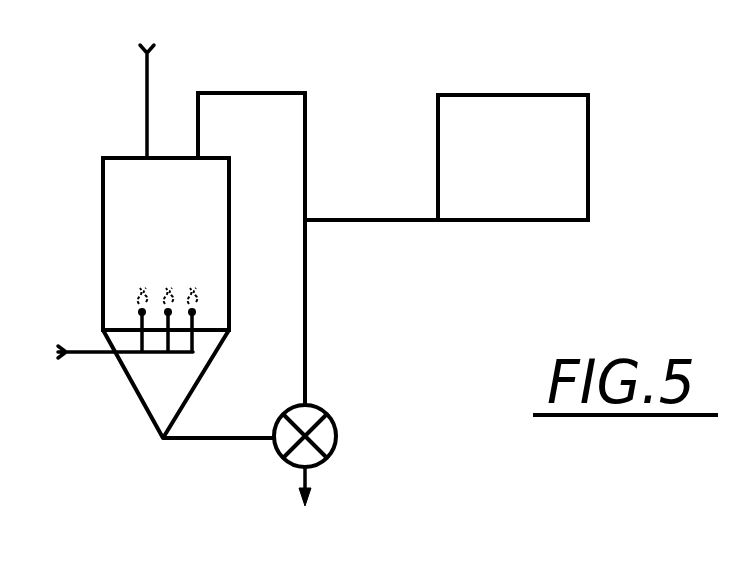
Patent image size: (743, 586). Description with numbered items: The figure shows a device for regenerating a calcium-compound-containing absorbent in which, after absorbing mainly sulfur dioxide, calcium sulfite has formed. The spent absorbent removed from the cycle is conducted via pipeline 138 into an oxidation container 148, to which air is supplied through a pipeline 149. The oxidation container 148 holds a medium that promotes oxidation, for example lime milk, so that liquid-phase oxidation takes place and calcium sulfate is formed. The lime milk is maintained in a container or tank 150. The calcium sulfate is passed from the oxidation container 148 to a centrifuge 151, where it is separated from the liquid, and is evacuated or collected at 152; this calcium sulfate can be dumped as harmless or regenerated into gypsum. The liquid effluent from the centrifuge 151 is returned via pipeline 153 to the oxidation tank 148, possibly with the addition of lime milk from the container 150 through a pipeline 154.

The pipeline 138 is at (147, 117).
The oxidation container 148 is at (127, 212).
The pipeline 149 is at (87, 353).
The container or tank 150 is at (567, 158).
The centrifuge 151 is at (327, 437).
The collection point 152 is at (300, 477).
The pipeline 153 is at (305, 142).
The pipeline 154 is at (385, 222).